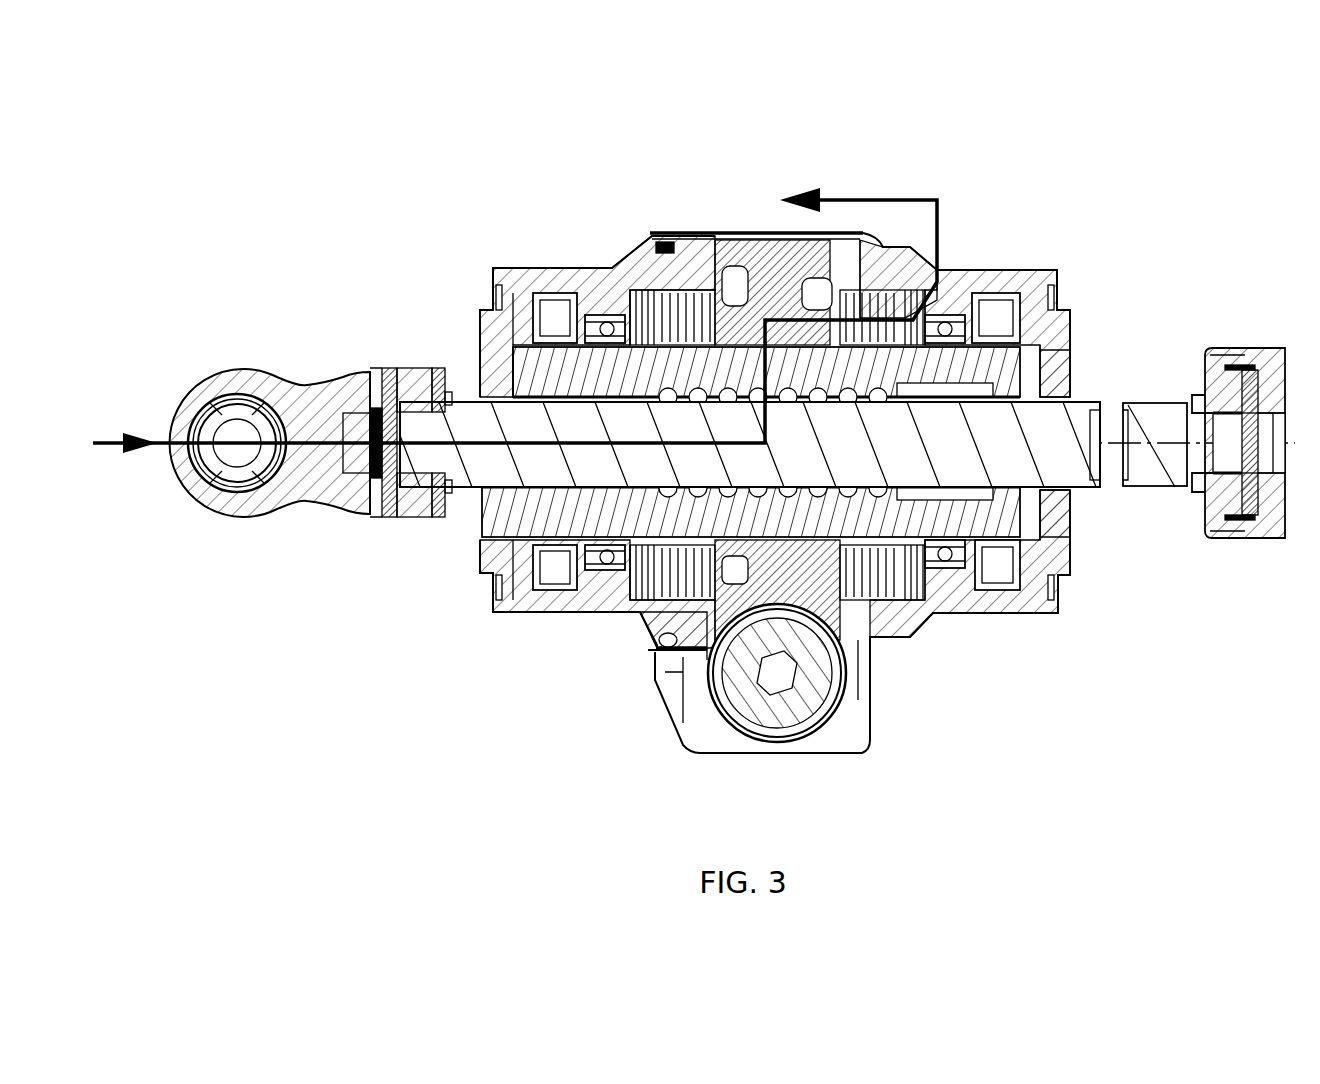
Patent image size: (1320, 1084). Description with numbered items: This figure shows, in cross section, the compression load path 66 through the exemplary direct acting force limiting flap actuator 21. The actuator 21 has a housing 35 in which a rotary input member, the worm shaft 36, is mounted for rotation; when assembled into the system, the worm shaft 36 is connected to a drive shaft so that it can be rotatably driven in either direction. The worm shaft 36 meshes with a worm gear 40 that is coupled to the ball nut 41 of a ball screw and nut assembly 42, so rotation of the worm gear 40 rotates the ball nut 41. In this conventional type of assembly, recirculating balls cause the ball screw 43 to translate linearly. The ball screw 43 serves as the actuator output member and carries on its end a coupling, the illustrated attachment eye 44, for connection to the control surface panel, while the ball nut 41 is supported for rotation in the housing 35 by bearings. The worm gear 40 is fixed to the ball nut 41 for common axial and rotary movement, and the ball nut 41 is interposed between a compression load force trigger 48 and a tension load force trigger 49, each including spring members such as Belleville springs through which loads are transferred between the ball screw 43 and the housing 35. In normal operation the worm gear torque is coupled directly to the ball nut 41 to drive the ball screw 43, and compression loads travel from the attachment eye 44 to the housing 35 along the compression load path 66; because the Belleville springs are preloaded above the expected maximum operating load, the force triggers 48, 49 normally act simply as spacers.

The actuator 21 is at (1143, 225).
The housing 35 is at (990, 268).
The worm shaft 36 is at (812, 702).
The worm gear 40 is at (826, 232).
The ball nut 41 is at (992, 366).
The ball screw and nut assembly 42 is at (1068, 462).
The ball screw 43 is at (484, 467).
The attachment eye 44 is at (251, 358).
The compression load force trigger 48 is at (891, 264).
The tension load force trigger 49 is at (660, 607).
The compression load path 66 is at (515, 318).